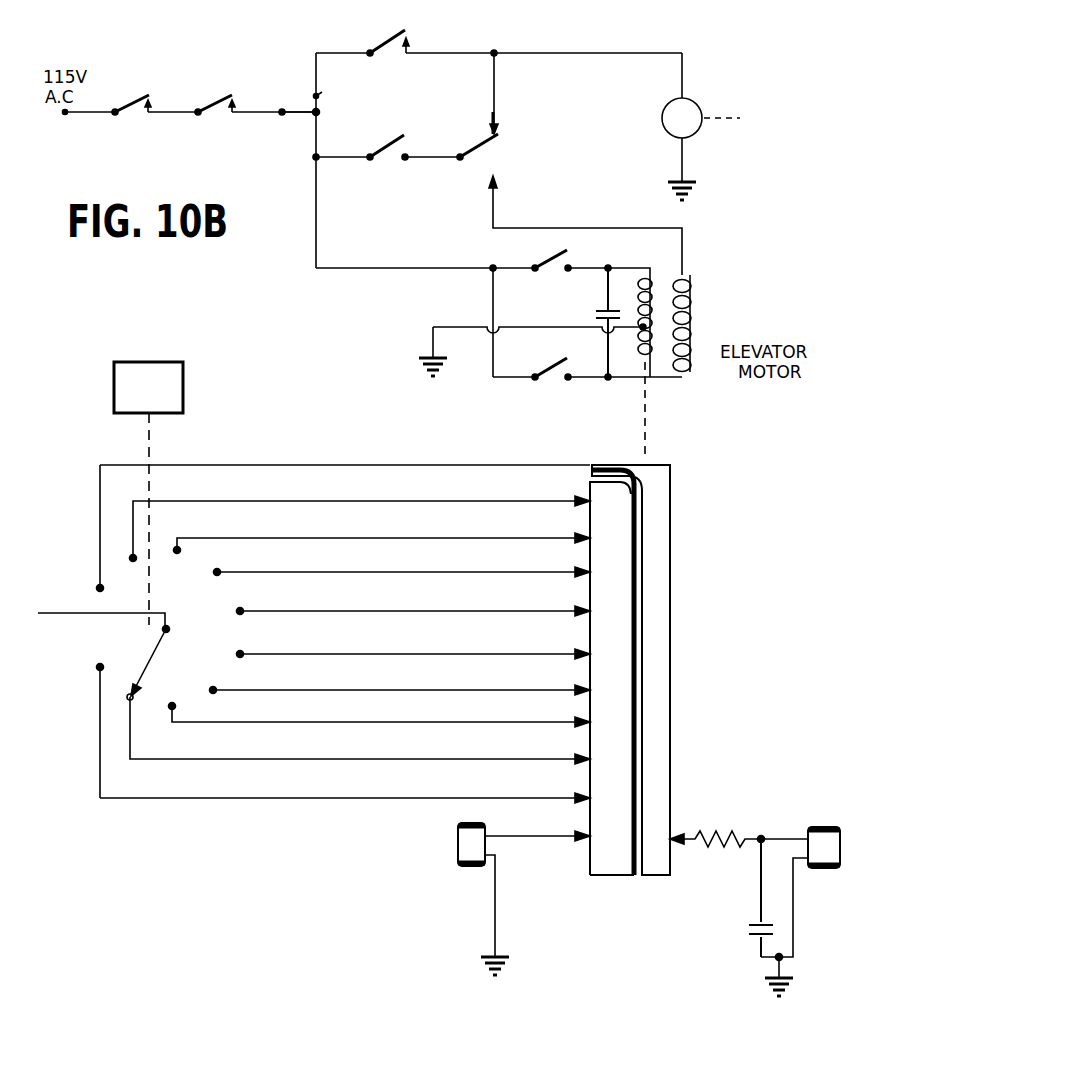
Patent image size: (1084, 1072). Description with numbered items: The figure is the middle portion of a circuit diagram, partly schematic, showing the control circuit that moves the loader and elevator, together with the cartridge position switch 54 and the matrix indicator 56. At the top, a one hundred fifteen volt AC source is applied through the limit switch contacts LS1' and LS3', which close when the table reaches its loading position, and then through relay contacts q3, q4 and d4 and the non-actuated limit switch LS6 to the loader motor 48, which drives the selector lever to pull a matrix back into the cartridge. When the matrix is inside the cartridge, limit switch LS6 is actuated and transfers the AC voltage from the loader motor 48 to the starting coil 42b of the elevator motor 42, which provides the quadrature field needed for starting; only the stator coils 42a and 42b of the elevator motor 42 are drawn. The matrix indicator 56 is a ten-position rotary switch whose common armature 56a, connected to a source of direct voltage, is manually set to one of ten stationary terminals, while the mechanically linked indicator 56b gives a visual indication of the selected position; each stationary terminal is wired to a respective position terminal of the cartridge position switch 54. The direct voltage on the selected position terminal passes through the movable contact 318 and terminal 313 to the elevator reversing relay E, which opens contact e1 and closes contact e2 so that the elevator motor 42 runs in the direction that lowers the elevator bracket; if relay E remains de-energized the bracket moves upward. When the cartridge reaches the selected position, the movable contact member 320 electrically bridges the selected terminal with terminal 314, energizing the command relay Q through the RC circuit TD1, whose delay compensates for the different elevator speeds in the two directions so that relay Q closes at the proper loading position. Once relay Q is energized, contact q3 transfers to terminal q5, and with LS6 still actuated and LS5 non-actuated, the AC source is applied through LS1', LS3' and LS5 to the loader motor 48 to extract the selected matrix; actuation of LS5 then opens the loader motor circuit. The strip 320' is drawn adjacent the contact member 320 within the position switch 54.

The loader motor 48 is at (697, 94).
The elevator motor 42 is at (700, 272).
The stator coil 42a is at (660, 378).
The starting coil 42b is at (690, 318).
The cartridge position switch 54 is at (684, 632).
The matrix indicator 56 is at (248, 455).
The common armature 56a is at (148, 684).
The indicator 56b is at (186, 381).
The terminal 313 is at (562, 836).
The positioning switch terminal 314 is at (690, 838).
The movable contact 318 is at (604, 880).
The movable contact member 320 is at (662, 670).
The conductive strip 320' is at (590, 651).
The limit switch contacts LS1' is at (131, 85).
The limit switch contacts LS3' is at (211, 85).
The limit switch LS5 is at (375, 40).
The limit switch LS6 is at (472, 140).
The relay contact q3 is at (300, 108).
The relay contact q4 is at (320, 116).
The relay contact q5 is at (322, 92).
The relay contact d4 is at (384, 158).
The relay contact e1 is at (545, 255).
The relay contact e2 is at (552, 380).
The RC circuit TD1 is at (748, 912).
The elevator reversing relay E is at (483, 899).
The command relay Q is at (824, 847).